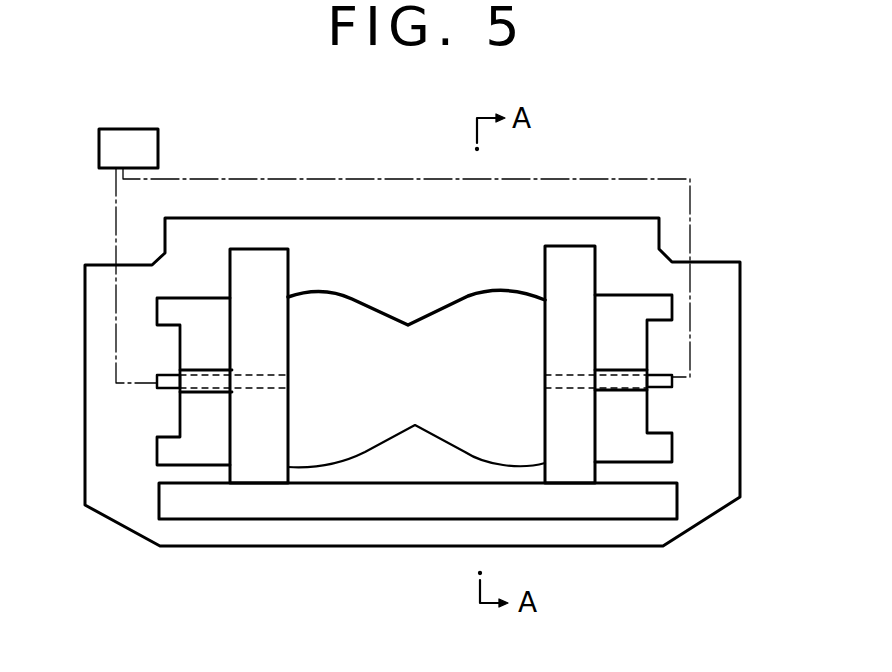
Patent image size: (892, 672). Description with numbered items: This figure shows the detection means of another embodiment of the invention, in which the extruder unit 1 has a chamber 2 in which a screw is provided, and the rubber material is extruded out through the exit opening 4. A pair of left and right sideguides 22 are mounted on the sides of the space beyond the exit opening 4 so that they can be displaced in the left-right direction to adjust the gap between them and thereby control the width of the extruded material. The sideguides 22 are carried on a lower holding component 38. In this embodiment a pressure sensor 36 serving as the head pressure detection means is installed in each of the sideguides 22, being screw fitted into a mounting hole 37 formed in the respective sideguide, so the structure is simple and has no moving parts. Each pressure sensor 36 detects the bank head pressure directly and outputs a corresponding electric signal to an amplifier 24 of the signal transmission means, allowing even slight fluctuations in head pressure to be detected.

The extruder unit 1 is at (325, 128).
The chamber 2 is at (375, 446).
The exit opening 4 is at (355, 335).
The sideguides 22 is at (263, 472).
The amplifier 24 is at (150, 150).
The pressure sensor 36 is at (288, 388).
The mounting hole 37 is at (288, 376).
The lower holding component 38 is at (427, 503).